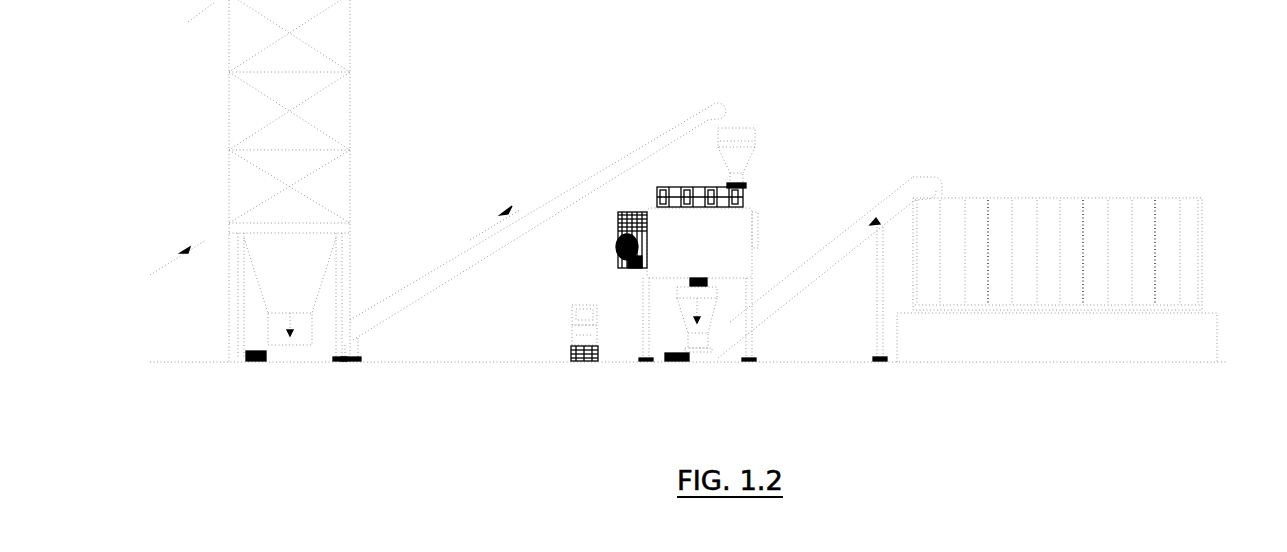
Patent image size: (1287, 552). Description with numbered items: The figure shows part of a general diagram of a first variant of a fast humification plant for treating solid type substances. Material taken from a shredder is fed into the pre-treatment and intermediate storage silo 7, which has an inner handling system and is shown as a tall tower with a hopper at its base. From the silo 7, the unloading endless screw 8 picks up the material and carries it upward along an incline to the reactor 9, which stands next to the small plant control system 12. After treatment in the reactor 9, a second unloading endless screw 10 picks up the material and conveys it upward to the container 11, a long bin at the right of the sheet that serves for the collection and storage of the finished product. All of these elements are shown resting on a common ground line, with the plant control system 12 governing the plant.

The pre-treatment and intermediate storage silo 7 is at (250, 205).
The unloading endless screw 8 is at (533, 256).
The reactor 9 is at (687, 269).
The unloading endless screw 10 is at (830, 293).
The container 11 is at (1057, 304).
The plant control system 12 is at (588, 357).